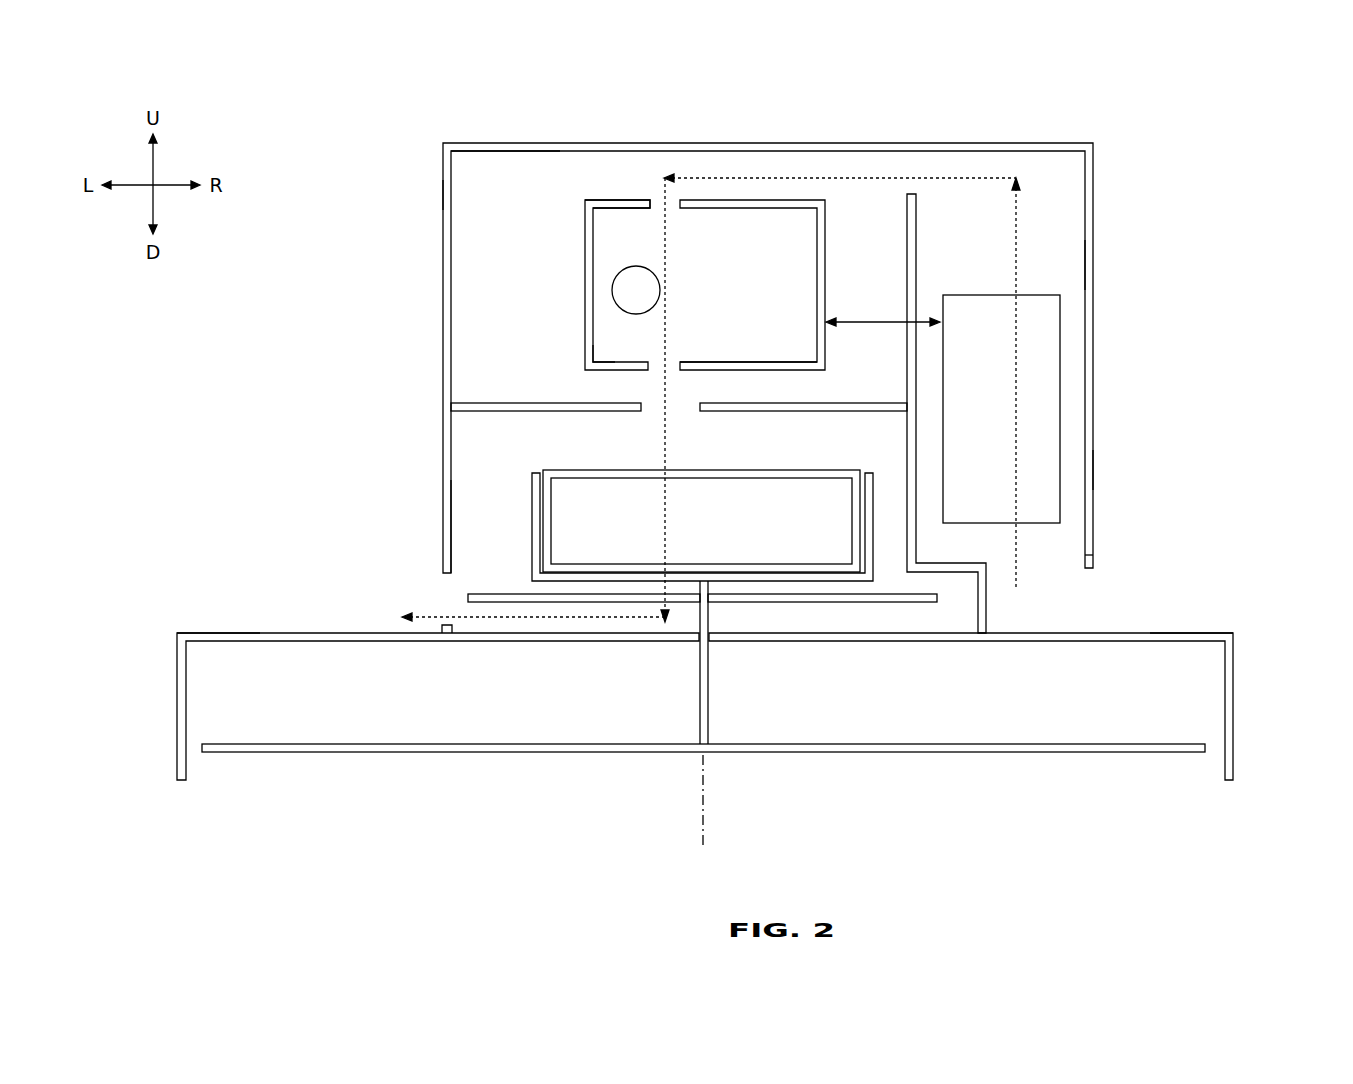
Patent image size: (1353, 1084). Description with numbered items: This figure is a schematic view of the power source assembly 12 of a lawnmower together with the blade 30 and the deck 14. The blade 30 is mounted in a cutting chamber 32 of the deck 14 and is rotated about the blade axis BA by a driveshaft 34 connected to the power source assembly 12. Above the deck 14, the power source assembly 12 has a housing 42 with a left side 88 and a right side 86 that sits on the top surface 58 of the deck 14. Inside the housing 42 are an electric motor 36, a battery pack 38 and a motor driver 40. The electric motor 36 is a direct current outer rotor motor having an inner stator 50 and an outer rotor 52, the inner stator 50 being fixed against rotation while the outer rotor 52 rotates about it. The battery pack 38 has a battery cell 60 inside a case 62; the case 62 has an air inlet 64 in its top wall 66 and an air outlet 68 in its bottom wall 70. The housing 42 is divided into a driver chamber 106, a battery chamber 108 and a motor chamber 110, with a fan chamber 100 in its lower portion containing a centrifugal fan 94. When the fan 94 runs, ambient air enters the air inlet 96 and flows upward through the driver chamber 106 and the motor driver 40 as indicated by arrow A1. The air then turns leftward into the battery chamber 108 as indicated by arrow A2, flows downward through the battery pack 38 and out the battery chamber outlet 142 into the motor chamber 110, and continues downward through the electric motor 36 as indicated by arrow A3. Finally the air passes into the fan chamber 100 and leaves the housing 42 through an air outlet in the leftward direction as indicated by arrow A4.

The power source assembly 12 is at (200, 392).
The deck 14 is at (1233, 720).
The blade 30 is at (437, 753).
The cutting chamber 32 is at (393, 701).
The driveshaft 34 is at (708, 715).
The electric motor 36 is at (502, 552).
The battery pack 38 is at (506, 285).
The motor driver 40 is at (1053, 390).
The housing 42 is at (1100, 142).
The inner stator 50 is at (738, 533).
The outer rotor 52 is at (532, 500).
The top surface 58 is at (247, 633).
The battery cell 60 is at (620, 292).
The case 62 is at (587, 230).
The air inlet 64 is at (682, 210).
The top wall 66 is at (628, 200).
The air outlet 68 is at (682, 360).
The bottom wall 70 is at (613, 360).
The right side 86 is at (1097, 468).
The left side 88 is at (443, 195).
The fan 94 is at (883, 603).
The air inlet 96 is at (1060, 563).
The fan chamber 100 is at (965, 607).
The driver chamber 106 is at (1058, 262).
The battery chamber 108 is at (508, 173).
The motor chamber 110 is at (483, 523).
The battery chamber outlet 142 is at (700, 404).
The arrow A1 is at (1017, 245).
The arrow A2 is at (845, 178).
The arrow A3 is at (668, 450).
The arrow A4 is at (558, 617).
The blade axis BA is at (703, 795).